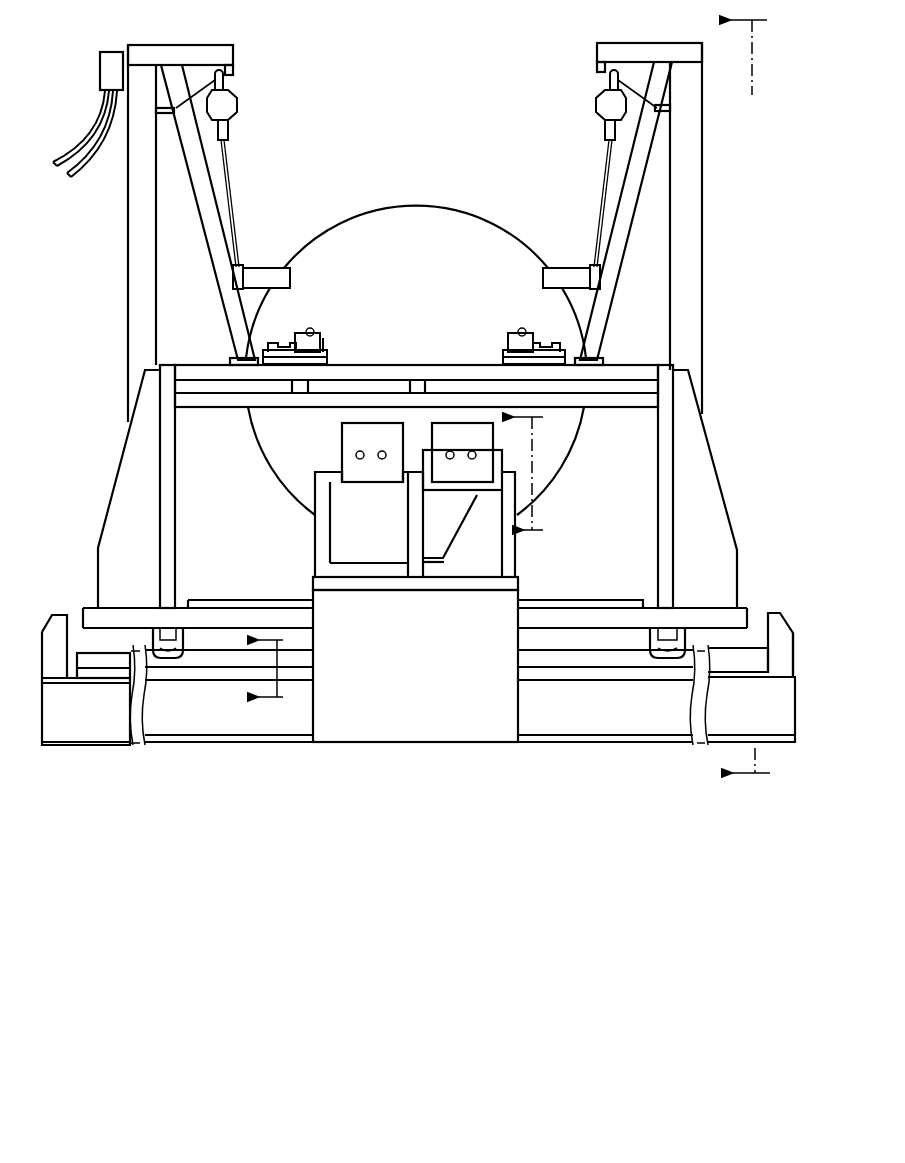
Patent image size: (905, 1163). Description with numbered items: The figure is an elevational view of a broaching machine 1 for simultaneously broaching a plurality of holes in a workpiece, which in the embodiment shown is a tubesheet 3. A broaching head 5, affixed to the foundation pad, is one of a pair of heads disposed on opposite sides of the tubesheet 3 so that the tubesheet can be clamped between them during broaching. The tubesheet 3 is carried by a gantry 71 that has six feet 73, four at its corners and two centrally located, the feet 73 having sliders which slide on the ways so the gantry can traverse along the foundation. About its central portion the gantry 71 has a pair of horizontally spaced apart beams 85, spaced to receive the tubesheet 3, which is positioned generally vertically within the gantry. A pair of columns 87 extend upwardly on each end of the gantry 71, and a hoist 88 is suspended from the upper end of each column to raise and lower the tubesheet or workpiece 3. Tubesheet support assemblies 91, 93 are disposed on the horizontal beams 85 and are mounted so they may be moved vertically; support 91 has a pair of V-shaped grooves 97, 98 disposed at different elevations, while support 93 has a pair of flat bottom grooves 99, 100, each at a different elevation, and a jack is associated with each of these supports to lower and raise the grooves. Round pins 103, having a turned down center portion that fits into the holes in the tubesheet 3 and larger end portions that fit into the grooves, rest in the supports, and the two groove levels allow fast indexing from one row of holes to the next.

The broaching machine 1 is at (742, 287).
The tubesheet 3 is at (503, 237).
The broaching head 5 is at (343, 440).
The gantry 71 is at (718, 488).
The feet 73 is at (170, 645).
The beam 85 is at (462, 368).
The column 87 is at (130, 233).
The hoist 88 is at (237, 103).
The tubesheet support assembly 91 is at (322, 345).
The tubesheet support assembly 93 is at (528, 337).
The V-shaped groove 97 is at (323, 341).
The V-shaped groove 98 is at (284, 345).
The flat bottom groove 99 is at (508, 347).
The flat bottom groove 100 is at (550, 338).
The round pin 103 is at (311, 328).